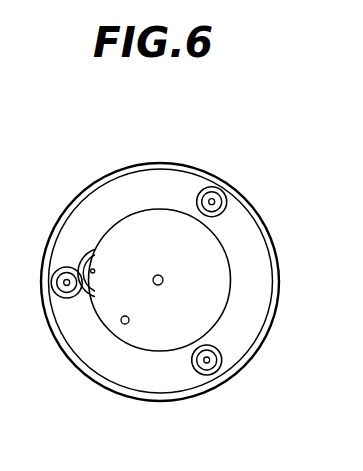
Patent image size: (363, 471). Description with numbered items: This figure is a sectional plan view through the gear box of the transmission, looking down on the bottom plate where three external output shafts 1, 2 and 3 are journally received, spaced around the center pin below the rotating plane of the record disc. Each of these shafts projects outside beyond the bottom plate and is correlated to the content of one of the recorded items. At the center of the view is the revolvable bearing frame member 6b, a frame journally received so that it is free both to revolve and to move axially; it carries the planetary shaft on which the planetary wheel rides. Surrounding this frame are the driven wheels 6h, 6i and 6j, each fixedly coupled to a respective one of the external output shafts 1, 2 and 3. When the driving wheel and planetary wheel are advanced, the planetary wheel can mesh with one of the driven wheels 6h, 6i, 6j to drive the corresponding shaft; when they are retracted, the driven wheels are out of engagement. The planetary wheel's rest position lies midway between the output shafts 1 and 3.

The external output shaft 1 is at (56, 271).
The external output shaft 2 is at (208, 362).
The external output shaft 3 is at (213, 198).
The revolvable bearing frame member 6b is at (155, 208).
The driven wheel 6h is at (55, 294).
The driven wheel 6i is at (222, 354).
The driven wheel 6j is at (227, 208).